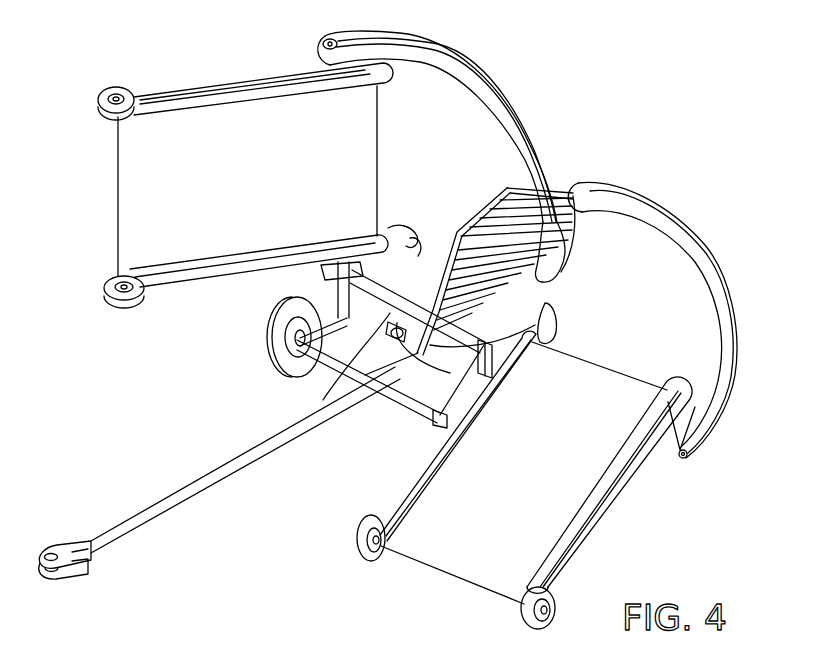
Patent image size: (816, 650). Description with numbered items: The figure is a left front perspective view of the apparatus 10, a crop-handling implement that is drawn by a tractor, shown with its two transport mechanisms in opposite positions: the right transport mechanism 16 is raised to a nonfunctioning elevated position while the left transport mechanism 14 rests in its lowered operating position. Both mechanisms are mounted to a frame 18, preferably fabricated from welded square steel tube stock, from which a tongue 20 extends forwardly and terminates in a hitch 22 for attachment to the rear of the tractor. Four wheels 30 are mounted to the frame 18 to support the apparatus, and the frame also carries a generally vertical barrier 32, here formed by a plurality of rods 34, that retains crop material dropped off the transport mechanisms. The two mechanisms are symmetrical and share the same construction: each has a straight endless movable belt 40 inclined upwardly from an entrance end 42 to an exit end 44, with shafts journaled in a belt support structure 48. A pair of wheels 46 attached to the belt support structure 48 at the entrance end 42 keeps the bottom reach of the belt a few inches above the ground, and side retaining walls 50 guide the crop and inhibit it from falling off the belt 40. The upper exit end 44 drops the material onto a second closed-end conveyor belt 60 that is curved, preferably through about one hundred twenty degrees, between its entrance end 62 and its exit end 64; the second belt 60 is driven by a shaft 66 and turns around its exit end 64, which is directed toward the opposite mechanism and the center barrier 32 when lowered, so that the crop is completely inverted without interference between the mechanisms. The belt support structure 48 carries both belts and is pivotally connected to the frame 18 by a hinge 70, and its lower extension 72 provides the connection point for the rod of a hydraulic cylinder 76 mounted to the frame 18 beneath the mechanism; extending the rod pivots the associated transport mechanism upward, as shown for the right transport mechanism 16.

The apparatus 10 is at (630, 65).
The left transport mechanism 14 is at (728, 428).
The right transport mechanism 16 is at (445, 31).
The frame 18 is at (304, 372).
The tongue 20 is at (175, 503).
The hitch 22 is at (66, 550).
The wheels 30 is at (372, 52).
The barrier 32 is at (498, 187).
The rods 34 is at (530, 187).
The belt 40 is at (182, 212).
The entrance end 42 is at (125, 179).
The exit end 44 is at (378, 158).
The wheels 46 is at (113, 88).
The belt support structure 48 is at (570, 557).
The side retaining walls 50 is at (210, 103).
The second conveyor belt 60 is at (465, 121).
The entrance end 62 is at (668, 460).
The exit end 64 is at (555, 251).
The shaft 66 is at (325, 41).
The hinge 70 is at (687, 243).
The lower extension 72 is at (398, 228).
The hydraulic cylinder 76 is at (388, 320).